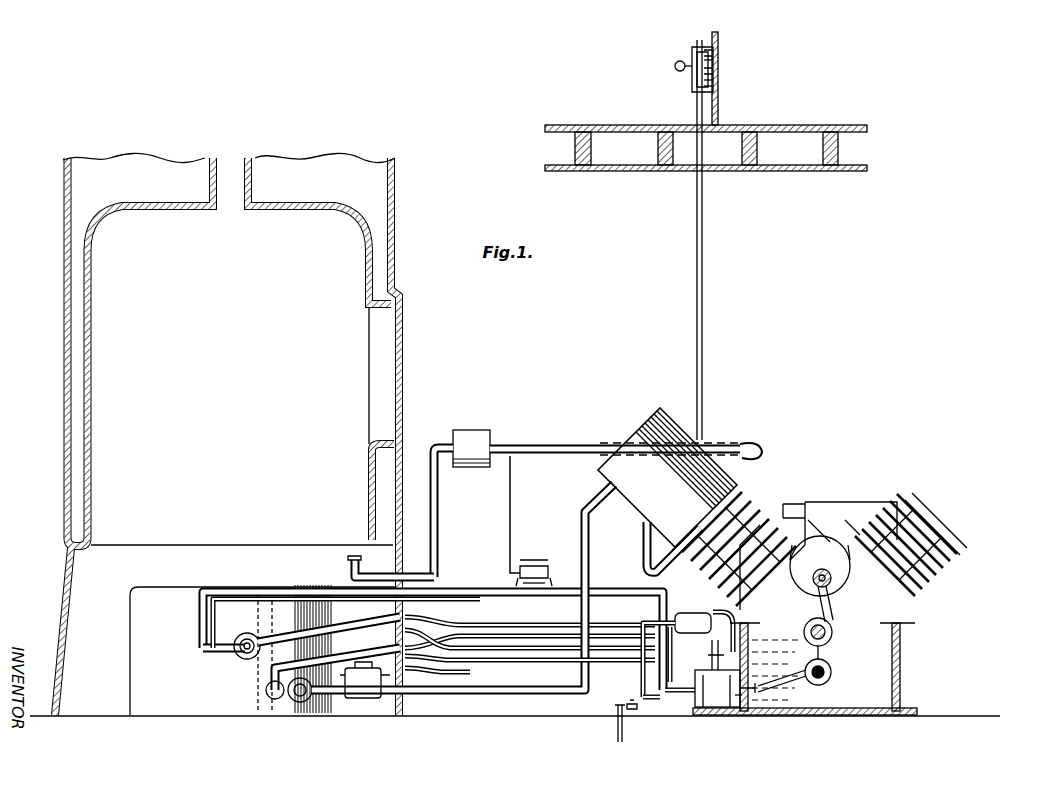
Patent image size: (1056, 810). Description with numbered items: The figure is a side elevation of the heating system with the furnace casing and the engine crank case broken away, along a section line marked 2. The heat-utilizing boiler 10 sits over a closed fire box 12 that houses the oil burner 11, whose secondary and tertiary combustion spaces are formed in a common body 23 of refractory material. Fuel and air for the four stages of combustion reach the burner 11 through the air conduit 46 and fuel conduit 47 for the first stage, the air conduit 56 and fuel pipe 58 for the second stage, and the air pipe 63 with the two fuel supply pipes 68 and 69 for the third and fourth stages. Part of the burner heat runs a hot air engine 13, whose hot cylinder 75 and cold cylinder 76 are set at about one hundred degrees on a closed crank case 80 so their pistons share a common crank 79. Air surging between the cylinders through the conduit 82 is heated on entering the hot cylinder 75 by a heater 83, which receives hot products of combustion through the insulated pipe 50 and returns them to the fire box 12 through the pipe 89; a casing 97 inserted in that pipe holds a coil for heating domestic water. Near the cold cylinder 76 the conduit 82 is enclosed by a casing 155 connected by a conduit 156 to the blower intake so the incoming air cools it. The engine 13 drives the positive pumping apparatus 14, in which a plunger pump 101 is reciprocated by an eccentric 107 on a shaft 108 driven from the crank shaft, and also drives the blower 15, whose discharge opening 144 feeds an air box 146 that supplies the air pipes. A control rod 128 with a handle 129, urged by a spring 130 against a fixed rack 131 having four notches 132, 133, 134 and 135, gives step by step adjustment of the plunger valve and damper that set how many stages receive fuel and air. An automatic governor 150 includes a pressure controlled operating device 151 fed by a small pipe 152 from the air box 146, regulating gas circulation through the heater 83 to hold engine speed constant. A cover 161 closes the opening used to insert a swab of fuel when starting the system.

The boiler 10 is at (95, 378).
The section line 2 is at (80, 570).
The oil burner 11 is at (172, 592).
The fire box 12 is at (60, 622).
The hot air engine 13 is at (822, 500).
The positive pumping apparatus 14 is at (716, 710).
The blower 15 is at (840, 520).
The body of refractory material 23 is at (262, 651).
The air conduit 46 is at (446, 664).
The fuel conduit 47 is at (524, 653).
The pipe 50 is at (503, 694).
The air conduit 56 is at (265, 696).
The fuel pipe 58 is at (524, 628).
The air pipe 63 is at (268, 668).
The fuel supply pipe 68 is at (210, 628).
The fuel supply pipe 69 is at (198, 613).
The hot cylinder 75 is at (762, 508).
The cold cylinder 76 is at (948, 548).
The crank 79 is at (832, 638).
The crank case 80 is at (903, 676).
The conduit 82 is at (645, 550).
The heater 83 is at (648, 422).
The pipe 89 is at (756, 438).
The casing 97 is at (477, 436).
The plunger pump 101 is at (735, 702).
The eccentric 107 is at (828, 680).
The shaft 108 is at (832, 669).
The control rod 128 is at (706, 266).
The handle 129 is at (678, 72).
The spring 130 is at (692, 58).
The fixed rack 131 is at (716, 71).
The notch 132 is at (716, 88).
The notch 133 is at (716, 80).
The notch 134 is at (716, 60).
The notch 135 is at (716, 49).
The discharge opening 144 is at (829, 595).
The air box 146 is at (724, 611).
The automatic governor 150 is at (526, 562).
The pressure controlled operating device 151 is at (550, 566).
The small pipe 152 is at (594, 572).
The casing 155 is at (848, 500).
The conduit 156 is at (806, 506).
The cover 161 is at (367, 688).